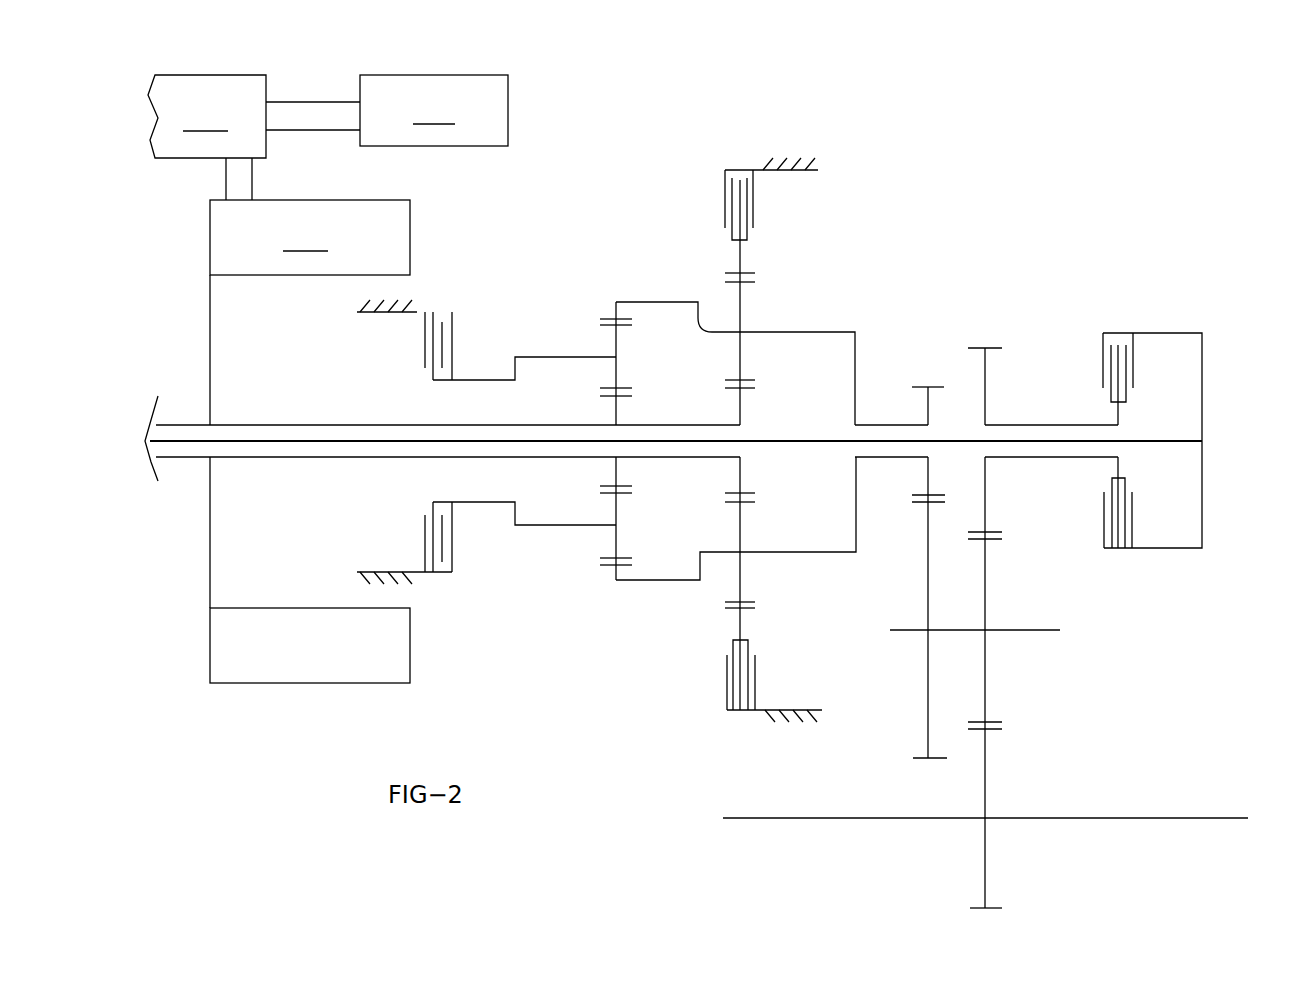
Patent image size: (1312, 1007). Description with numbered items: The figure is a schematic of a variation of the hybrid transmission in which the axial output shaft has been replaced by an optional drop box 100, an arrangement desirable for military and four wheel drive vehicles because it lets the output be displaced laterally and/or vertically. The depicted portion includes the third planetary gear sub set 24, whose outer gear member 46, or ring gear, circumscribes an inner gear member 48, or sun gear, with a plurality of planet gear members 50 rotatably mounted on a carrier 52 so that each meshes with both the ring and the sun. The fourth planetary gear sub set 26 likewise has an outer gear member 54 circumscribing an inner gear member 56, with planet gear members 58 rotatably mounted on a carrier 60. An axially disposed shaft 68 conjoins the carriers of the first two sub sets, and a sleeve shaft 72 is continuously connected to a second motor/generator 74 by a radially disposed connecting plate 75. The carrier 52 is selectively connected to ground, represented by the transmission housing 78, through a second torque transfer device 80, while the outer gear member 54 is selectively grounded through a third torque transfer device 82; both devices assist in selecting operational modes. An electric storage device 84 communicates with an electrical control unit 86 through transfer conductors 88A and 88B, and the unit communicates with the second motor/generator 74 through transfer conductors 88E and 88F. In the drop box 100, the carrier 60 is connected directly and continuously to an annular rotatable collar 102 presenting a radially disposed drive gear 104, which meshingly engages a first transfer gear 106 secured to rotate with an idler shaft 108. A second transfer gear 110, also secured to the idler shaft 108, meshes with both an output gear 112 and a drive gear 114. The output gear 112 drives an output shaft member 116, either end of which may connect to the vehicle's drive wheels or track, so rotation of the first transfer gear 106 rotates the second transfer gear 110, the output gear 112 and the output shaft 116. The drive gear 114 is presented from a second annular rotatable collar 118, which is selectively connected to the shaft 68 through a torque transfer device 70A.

The third planetary gear sub set 24 is at (624, 298).
The fourth planetary gear sub set 26 is at (777, 276).
The outer gear member 46 is at (612, 318).
The inner gear member 48 is at (630, 486).
The planet gear members 50 is at (616, 380).
The carrier 52 is at (515, 370).
The outer gear member 54 is at (727, 275).
The inner gear member 56 is at (753, 385).
The planet gear members 58 is at (740, 325).
The carrier 60 is at (698, 322).
The axially disposed shaft 68 is at (283, 457).
The torque transfer device 70A is at (1118, 365).
The sleeve shaft 72 is at (260, 425).
The second motor/generator 74 is at (310, 237).
The radially disposed connecting plate 75 is at (212, 342).
The transmission housing 78 is at (773, 160).
The second torque transfer device 80 is at (424, 340).
The third torque transfer device 82 is at (738, 195).
The electric storage device 84 is at (434, 110).
The electrical control unit 86 is at (207, 116).
The transfer conductor 88A is at (310, 102).
The transfer conductor 88B is at (332, 130).
The transfer conductor 88E is at (226, 183).
The transfer conductor 88F is at (252, 186).
The drop box 100 is at (1255, 322).
The annular rotatable collar 102 is at (878, 425).
The drive gear 104 is at (933, 387).
The first transfer gear 106 is at (928, 617).
The idler shaft 108 is at (1037, 630).
The second transfer gear 110 is at (985, 668).
The output gear 112 is at (985, 862).
The drive gear 114 is at (987, 480).
The output shaft member 116 is at (1107, 818).
The second annular rotatable collar 118 is at (1035, 425).